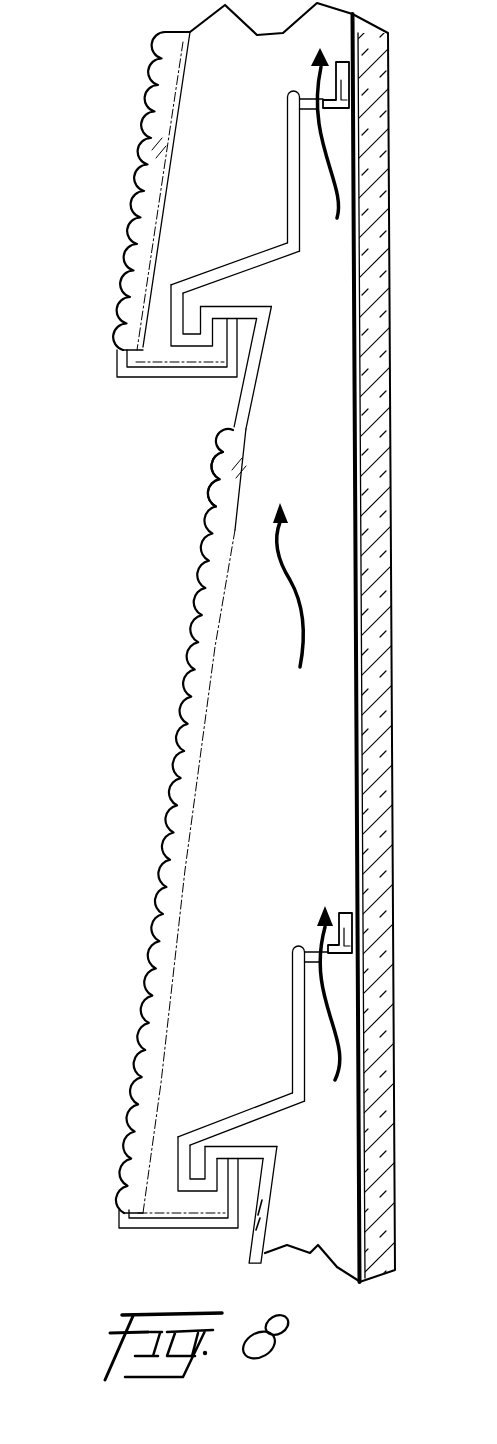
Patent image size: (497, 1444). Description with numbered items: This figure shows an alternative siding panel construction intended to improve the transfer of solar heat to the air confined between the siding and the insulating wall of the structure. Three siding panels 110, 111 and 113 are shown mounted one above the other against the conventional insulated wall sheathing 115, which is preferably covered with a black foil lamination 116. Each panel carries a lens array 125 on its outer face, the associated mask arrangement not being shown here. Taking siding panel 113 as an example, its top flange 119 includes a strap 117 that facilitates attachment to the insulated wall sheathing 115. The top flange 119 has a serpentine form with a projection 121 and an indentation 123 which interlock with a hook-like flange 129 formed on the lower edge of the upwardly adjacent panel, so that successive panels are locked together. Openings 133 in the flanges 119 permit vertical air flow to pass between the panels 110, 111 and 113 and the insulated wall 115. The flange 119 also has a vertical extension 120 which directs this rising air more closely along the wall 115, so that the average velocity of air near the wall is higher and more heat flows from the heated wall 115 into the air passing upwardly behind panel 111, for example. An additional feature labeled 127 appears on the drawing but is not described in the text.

The siding panel 110 is at (171, 152).
The siding panel 111 is at (236, 552).
The siding panel 113 is at (268, 1245).
The insulated wall sheathing 115 is at (370, 563).
The black foil lamination 116 is at (358, 470).
The strap 117 is at (333, 62).
The top flange 119 is at (230, 264).
The vertical extension 120 is at (298, 203).
The projection 121 is at (193, 352).
The indentation 123 is at (220, 300).
The lens array 125 is at (128, 272).
The front face of lower panel 127 is at (225, 472).
The hook-like flange 129 is at (197, 383).
The openings 133 is at (312, 97).